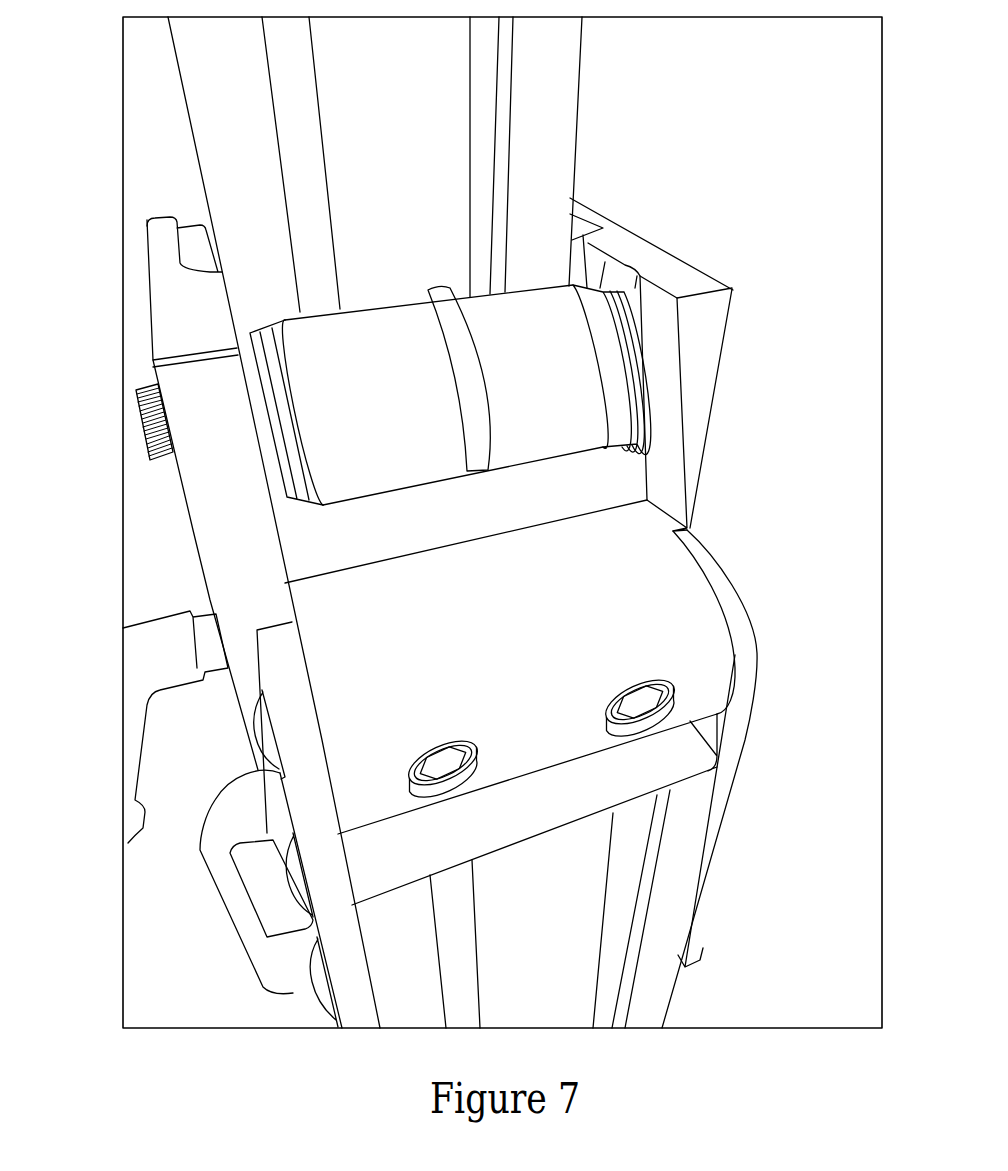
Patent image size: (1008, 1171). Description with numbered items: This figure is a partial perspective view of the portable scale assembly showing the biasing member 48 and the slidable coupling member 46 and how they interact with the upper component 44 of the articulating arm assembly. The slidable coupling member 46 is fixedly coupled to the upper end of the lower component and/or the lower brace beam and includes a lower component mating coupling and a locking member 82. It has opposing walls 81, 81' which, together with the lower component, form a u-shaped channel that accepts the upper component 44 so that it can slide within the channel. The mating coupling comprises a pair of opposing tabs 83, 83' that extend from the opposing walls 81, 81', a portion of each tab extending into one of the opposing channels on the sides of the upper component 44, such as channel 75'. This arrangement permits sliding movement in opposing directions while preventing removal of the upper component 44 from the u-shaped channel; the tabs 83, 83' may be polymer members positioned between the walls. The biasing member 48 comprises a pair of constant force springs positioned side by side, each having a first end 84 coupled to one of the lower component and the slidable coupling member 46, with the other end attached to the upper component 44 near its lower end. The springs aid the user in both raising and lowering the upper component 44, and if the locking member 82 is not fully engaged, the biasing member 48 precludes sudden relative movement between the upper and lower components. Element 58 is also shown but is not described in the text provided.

The upper component 44 is at (570, 68).
The channel 75' is at (215, 522).
The tab 83' is at (135, 242).
The wall 81' is at (195, 624).
The slidable coupling member 46 is at (142, 361).
The biasing member 48 is at (318, 440).
The tab 83 is at (611, 232).
The wall 81 is at (651, 364).
The first end 84 is at (478, 418).
The locking member 82 is at (118, 700).
The clamp body 58 is at (220, 909).